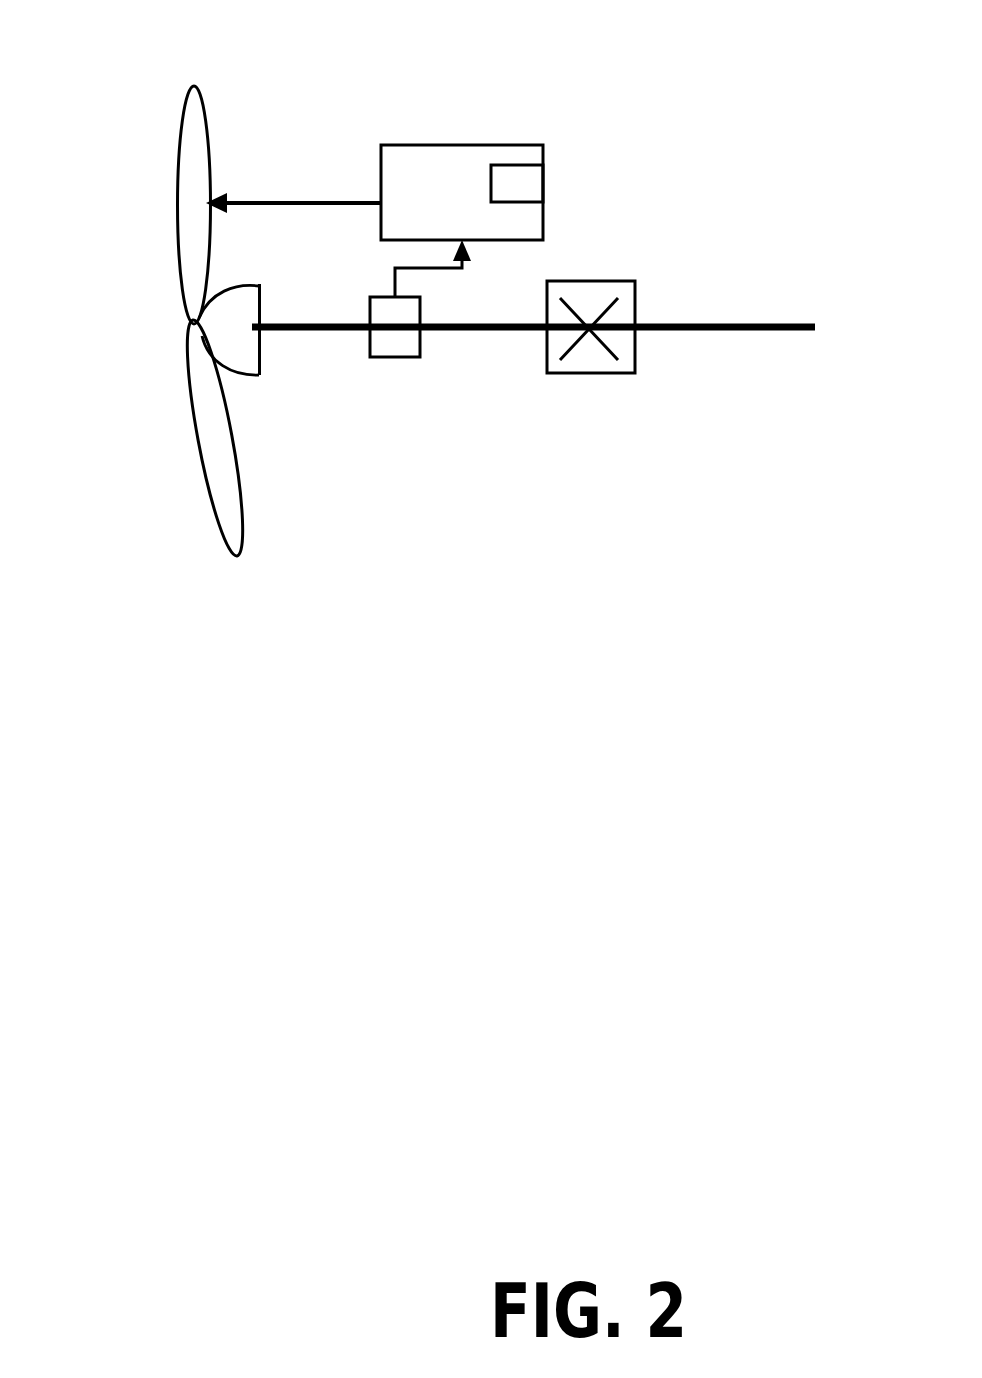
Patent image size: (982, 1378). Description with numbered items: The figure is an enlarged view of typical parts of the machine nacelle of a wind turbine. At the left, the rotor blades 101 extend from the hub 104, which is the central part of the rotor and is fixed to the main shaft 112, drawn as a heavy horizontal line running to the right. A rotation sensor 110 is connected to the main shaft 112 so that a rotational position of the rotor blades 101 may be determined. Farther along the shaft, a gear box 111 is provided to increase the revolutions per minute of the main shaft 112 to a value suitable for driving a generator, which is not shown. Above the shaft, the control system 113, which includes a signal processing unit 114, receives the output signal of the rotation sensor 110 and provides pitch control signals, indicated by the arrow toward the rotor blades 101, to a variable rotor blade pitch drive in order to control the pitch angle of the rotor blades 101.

The rotor blades 101 is at (203, 442).
The hub 104 is at (238, 307).
The rotation sensor 110 is at (395, 357).
The gear box 111 is at (590, 373).
The main shaft 112 is at (293, 333).
The control system 113 is at (460, 145).
The signal processing unit 114 is at (523, 183).